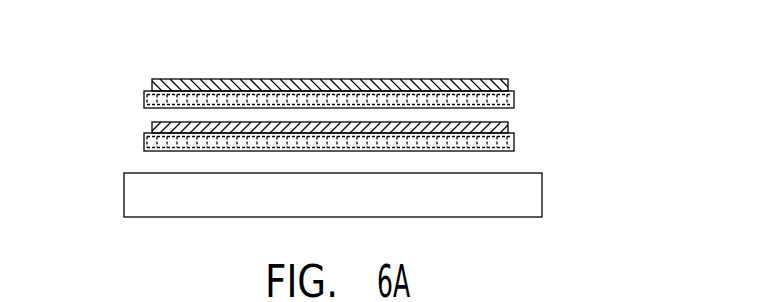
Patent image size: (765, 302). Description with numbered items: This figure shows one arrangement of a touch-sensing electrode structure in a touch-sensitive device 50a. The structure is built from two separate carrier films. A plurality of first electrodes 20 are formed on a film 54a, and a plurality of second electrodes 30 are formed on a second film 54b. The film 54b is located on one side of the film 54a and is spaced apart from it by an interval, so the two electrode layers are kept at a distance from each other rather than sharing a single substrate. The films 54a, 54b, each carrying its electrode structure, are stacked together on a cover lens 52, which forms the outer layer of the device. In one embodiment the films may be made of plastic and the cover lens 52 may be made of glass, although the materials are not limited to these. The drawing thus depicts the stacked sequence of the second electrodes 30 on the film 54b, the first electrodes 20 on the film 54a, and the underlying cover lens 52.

The touch-sensitive device 50a is at (75, 20).
The second electrodes 30 is at (152, 81).
The first electrodes 20 is at (152, 126).
The film 54b is at (513, 99).
The film 54a is at (513, 141).
The cover lens 52 is at (530, 198).